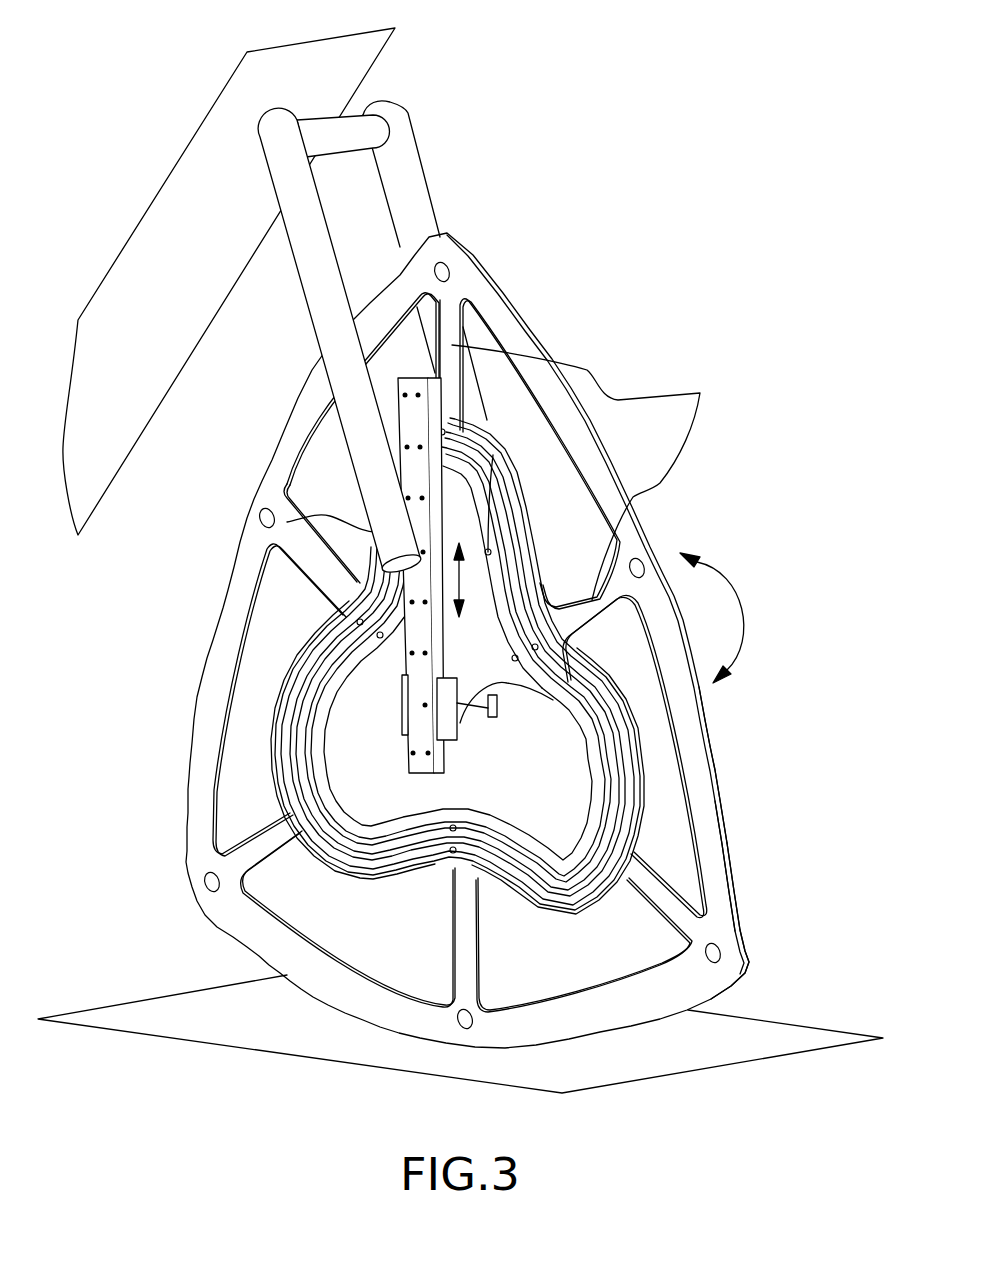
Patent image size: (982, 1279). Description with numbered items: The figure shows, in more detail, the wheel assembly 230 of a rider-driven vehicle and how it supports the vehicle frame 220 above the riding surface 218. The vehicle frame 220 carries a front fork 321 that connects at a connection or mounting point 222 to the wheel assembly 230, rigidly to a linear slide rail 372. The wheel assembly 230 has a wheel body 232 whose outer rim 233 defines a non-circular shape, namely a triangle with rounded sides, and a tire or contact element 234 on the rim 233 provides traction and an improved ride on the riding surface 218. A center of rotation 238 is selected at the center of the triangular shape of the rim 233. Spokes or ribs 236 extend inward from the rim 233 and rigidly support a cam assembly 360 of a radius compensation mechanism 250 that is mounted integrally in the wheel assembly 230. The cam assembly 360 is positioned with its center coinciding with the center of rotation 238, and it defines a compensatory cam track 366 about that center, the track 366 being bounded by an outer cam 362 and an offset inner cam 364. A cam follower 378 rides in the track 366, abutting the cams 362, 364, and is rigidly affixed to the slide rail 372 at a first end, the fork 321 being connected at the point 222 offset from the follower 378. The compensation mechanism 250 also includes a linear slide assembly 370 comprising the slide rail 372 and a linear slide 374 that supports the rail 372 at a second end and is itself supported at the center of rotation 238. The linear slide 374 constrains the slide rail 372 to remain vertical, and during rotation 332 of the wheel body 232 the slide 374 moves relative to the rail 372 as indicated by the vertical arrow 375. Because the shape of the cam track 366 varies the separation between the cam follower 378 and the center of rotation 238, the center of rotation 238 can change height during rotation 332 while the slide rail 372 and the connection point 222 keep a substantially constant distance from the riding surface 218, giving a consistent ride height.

The riding surface 218 is at (697, 1056).
The vehicle frame 220 is at (466, 159).
The connection or mounting point 222 is at (390, 547).
The wheel assembly 230 is at (801, 491).
The wheel body 232 is at (783, 967).
The outer rim 233 is at (720, 878).
The tire or contact element 234 is at (718, 793).
The spokes or ribs 236 is at (699, 394).
The center of rotation 238 is at (467, 707).
The radius compensation mechanism 250 is at (675, 743).
The front fork 321 is at (298, 286).
The rotation 332 is at (740, 600).
The cam assembly 360 is at (456, 708).
The outer cam 362 is at (347, 877).
The inner cam 364 is at (363, 843).
The compensatory cam track 366 is at (390, 870).
The linear slide assembly 370 is at (383, 705).
The linear slide rail 372 is at (410, 760).
The linear slide 374 is at (456, 676).
The vertical arrow 375 is at (460, 580).
The cam follower 378 is at (483, 450).